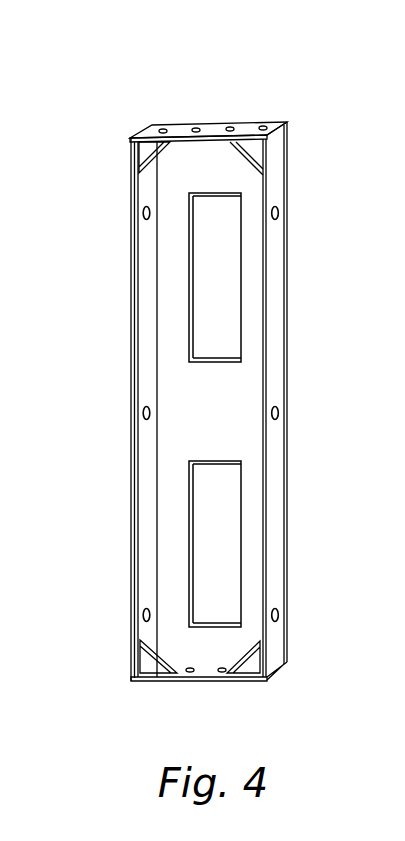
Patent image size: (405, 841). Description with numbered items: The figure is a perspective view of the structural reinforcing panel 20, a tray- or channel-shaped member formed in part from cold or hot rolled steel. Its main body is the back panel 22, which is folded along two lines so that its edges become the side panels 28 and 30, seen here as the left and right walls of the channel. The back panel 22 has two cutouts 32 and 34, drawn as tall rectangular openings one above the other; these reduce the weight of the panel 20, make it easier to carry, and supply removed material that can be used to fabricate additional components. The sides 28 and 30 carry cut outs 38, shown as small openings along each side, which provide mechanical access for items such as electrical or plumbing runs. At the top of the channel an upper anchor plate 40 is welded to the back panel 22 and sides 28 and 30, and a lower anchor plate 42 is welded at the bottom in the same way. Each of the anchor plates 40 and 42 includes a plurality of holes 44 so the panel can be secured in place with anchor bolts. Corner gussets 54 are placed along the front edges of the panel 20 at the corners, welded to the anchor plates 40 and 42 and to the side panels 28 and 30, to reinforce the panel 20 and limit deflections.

The structural reinforcing panel 20 is at (266, 69).
The back panel 22 is at (170, 194).
The side panel 28 is at (280, 458).
The side panel 30 is at (142, 307).
The cutout 32 is at (232, 293).
The cutout 34 is at (237, 510).
The cut outs 38 is at (143, 410).
The upper anchor plate 40 is at (212, 125).
The lower anchor plate 42 is at (168, 679).
The holes 44 is at (267, 129).
The corner gussets 54 is at (147, 660).